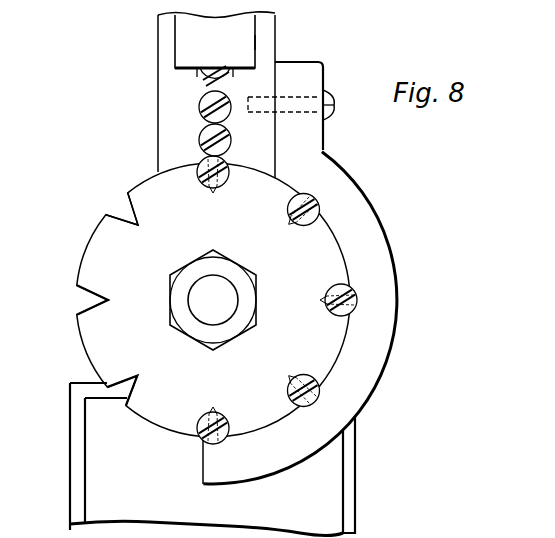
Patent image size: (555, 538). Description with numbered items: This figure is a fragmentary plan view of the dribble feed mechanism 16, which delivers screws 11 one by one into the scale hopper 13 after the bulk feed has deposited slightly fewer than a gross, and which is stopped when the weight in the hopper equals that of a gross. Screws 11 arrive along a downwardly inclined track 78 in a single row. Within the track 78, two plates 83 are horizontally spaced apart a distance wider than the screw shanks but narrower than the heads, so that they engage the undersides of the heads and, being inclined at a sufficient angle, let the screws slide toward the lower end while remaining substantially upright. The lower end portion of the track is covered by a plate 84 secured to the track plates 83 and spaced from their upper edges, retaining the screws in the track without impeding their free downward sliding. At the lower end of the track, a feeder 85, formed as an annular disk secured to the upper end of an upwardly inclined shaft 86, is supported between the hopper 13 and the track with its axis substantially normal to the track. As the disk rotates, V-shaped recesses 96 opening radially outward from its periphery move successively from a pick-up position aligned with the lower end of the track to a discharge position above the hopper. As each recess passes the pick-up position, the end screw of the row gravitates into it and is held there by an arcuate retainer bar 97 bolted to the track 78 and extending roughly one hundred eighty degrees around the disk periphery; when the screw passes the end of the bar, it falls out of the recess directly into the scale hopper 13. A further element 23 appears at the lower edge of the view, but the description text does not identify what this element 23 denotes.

The plate 84 is at (176, 33).
The downwardly inclined track 78 is at (256, 43).
The plates 83 is at (267, 58).
The screws 11 is at (206, 98).
The feeder 85 is at (148, 190).
The V-shaped recesses 96 is at (121, 216).
The dribble feed mechanism 16 is at (188, 296).
The upwardly inclined shaft 86 is at (225, 285).
The arcuate retainer bar 97 is at (378, 366).
The hopper 13 is at (345, 472).
The base 23 is at (128, 535).